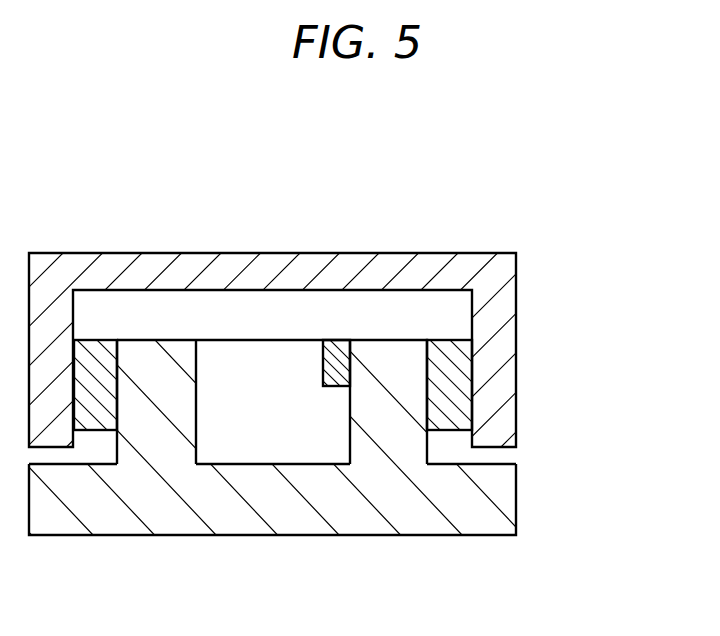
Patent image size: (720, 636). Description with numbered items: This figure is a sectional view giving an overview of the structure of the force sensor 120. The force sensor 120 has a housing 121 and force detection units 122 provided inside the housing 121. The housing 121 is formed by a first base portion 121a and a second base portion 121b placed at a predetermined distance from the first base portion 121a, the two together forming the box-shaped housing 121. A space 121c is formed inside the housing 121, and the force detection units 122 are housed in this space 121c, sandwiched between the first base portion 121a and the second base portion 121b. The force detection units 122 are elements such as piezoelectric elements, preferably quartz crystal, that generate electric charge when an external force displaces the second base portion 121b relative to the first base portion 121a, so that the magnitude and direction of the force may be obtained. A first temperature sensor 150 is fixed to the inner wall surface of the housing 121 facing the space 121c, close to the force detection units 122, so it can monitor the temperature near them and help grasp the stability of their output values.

The force sensor 120 is at (510, 190).
The housing 121 is at (615, 362).
The first base portion 121a is at (498, 500).
The second base portion 121b is at (500, 378).
The space 121c is at (273, 393).
The force detection unit 122 is at (97, 393).
The first temperature sensor 150 is at (337, 357).